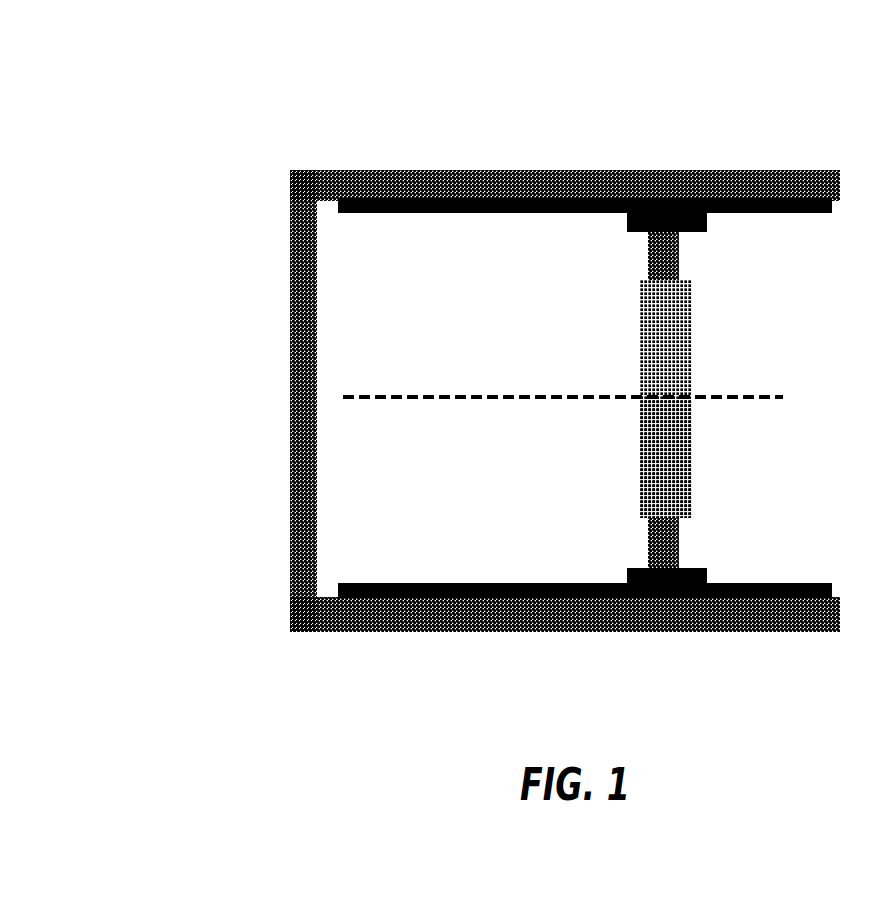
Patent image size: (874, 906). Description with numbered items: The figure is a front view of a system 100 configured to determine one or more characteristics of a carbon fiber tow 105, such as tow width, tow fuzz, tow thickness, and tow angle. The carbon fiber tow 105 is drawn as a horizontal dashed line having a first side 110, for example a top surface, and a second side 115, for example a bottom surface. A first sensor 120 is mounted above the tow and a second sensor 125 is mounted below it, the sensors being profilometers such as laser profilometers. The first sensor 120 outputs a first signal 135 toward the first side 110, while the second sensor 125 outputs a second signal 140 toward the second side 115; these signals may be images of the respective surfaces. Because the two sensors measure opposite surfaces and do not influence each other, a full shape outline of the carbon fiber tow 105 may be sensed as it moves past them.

The system 100 is at (147, 100).
The carbon fiber tow 105 is at (733, 382).
The first side 110 is at (487, 392).
The second side 115 is at (418, 403).
The first sensor 120 is at (642, 247).
The second sensor 125 is at (645, 552).
The first signal 135 is at (627, 373).
The second signal 140 is at (692, 436).